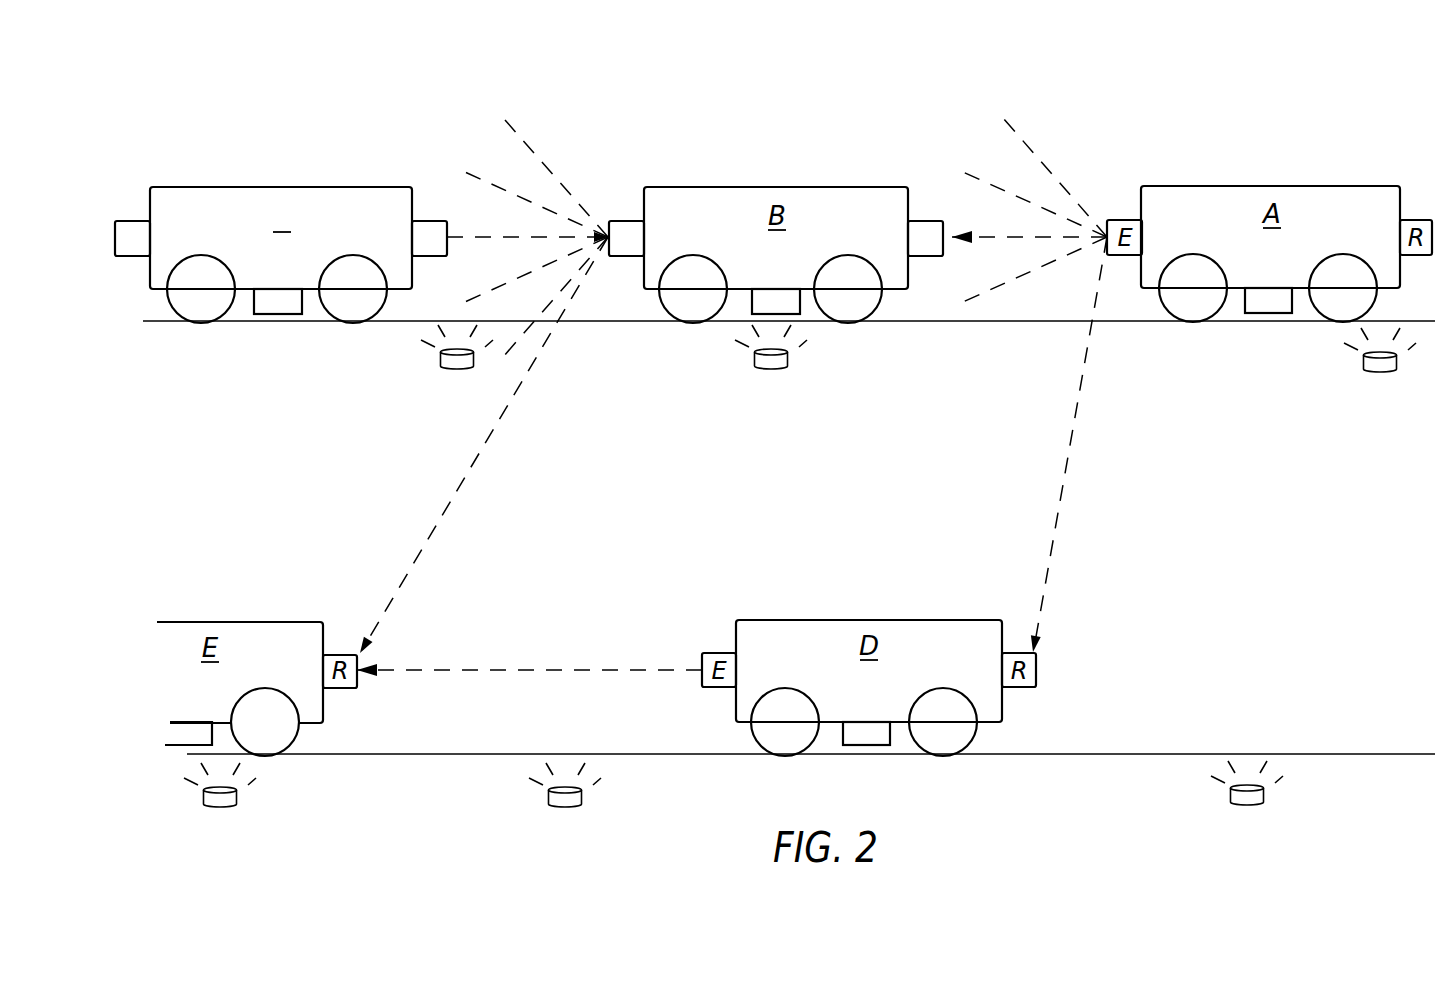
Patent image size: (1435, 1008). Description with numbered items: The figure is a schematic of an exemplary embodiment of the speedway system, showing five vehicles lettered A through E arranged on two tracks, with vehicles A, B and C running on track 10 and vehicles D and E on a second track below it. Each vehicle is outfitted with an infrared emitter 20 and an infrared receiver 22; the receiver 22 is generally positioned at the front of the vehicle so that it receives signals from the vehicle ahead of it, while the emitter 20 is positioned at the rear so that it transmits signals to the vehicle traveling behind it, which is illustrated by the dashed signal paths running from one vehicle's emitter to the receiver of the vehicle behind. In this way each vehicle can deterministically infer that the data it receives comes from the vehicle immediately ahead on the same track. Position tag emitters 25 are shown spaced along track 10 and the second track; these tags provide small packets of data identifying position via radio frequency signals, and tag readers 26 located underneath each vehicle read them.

The track 10 is at (288, 135).
The infrared emitter 20 is at (628, 220).
The infrared receiver 22 is at (929, 220).
The position tag emitter 25 is at (450, 359).
The tag reader 26 is at (280, 303).